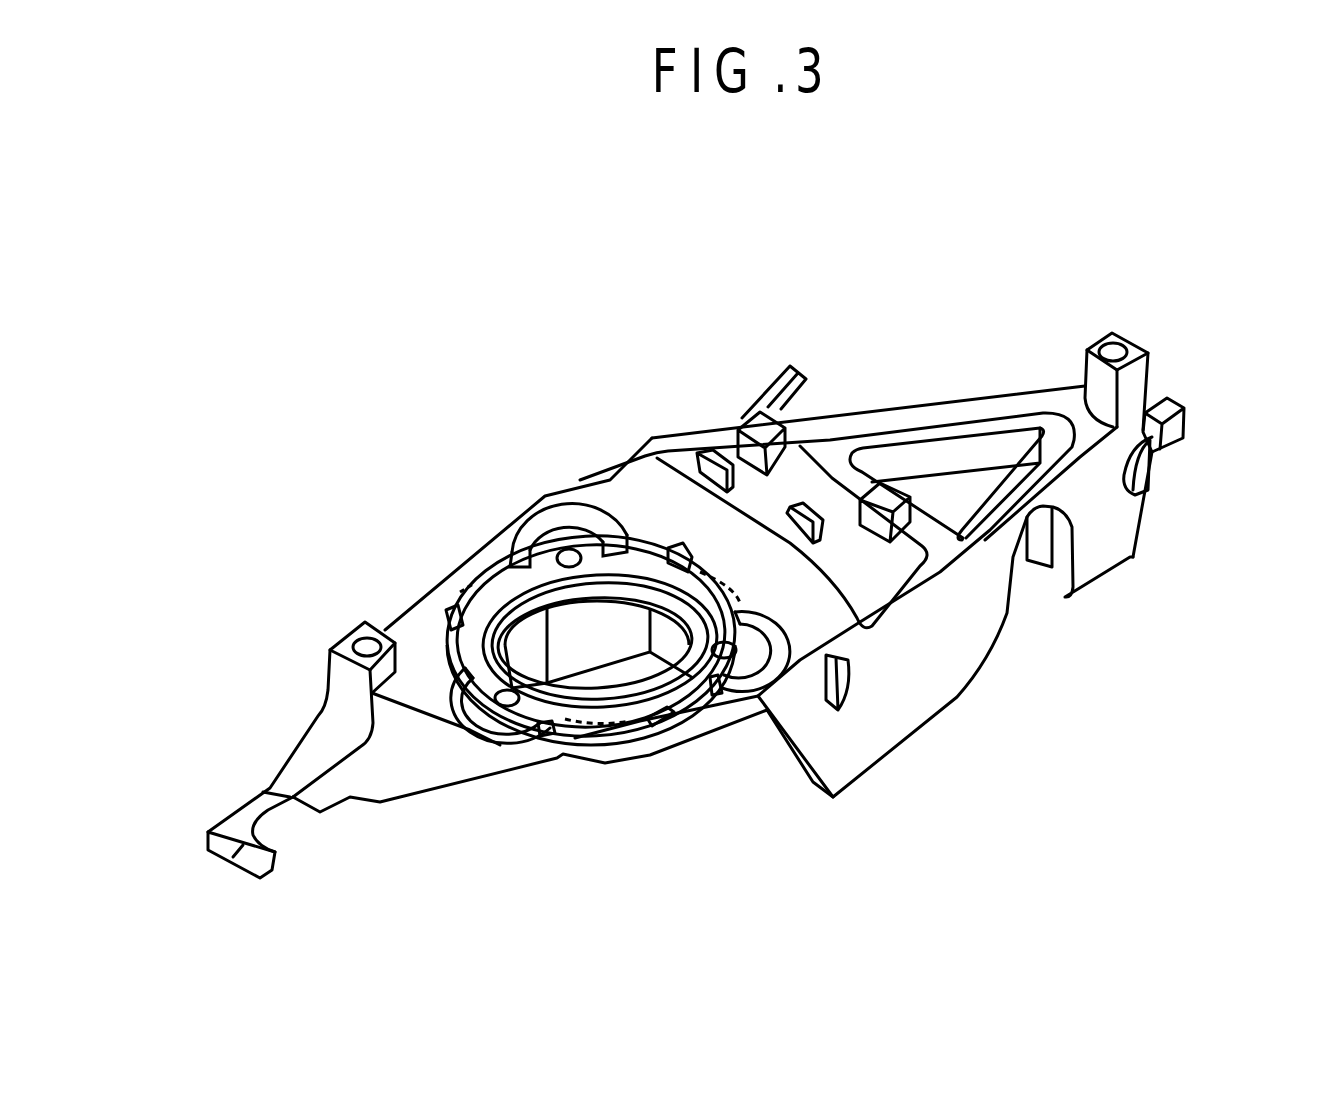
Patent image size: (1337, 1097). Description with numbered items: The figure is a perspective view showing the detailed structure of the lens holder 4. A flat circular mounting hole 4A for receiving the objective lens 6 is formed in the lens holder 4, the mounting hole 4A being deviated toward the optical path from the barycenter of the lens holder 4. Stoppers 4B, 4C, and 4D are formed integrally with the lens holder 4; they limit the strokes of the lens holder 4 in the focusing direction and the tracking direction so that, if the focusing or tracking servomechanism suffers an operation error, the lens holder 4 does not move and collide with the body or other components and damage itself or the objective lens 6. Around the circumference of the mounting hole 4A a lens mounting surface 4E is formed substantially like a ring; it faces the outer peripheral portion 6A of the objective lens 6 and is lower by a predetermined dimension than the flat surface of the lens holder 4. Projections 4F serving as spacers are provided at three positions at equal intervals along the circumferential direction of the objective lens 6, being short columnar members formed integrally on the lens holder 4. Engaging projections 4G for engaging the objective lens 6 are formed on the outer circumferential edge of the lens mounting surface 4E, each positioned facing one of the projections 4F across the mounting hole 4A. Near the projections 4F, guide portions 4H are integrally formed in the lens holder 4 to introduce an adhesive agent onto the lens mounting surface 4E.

The lens holder 4 is at (400, 627).
The mounting hole 4A is at (615, 587).
The stopper 4B is at (242, 850).
The stopper 4C is at (800, 372).
The stopper 4D is at (1176, 428).
The lens mounting surface 4E is at (490, 597).
The projections 4F is at (569, 548).
The engaging projections 4G is at (437, 606).
The guide portions 4H is at (528, 523).
The objective lens 6 is at (643, 528).
The outer peripheral portion 6A is at (715, 572).